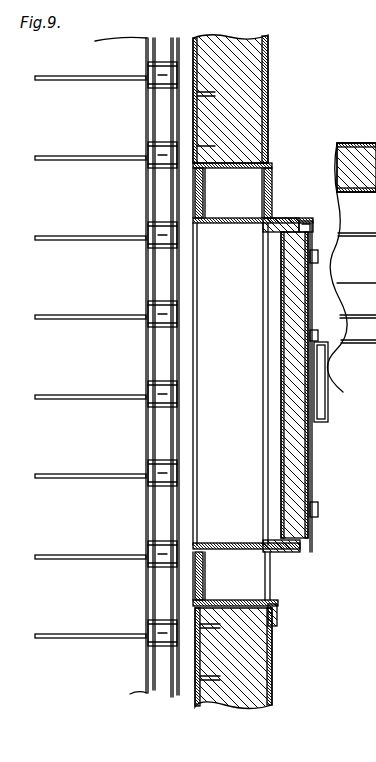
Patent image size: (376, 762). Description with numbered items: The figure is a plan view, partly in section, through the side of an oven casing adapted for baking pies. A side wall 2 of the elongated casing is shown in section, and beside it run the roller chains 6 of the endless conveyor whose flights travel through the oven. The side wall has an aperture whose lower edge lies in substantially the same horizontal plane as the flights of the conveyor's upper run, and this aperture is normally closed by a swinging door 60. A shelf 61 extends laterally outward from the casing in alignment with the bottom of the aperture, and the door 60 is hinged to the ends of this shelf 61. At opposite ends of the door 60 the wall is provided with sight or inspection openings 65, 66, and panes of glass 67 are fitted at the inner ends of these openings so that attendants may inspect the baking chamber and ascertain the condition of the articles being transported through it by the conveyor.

The side wall 2 is at (243, 97).
The roller chain 6 is at (107, 367).
The swinging door 60 is at (293, 457).
The shelf 61 is at (277, 216).
The sight opening 65 is at (260, 578).
The sight opening 66 is at (252, 193).
The pane of glass 67 is at (205, 197).